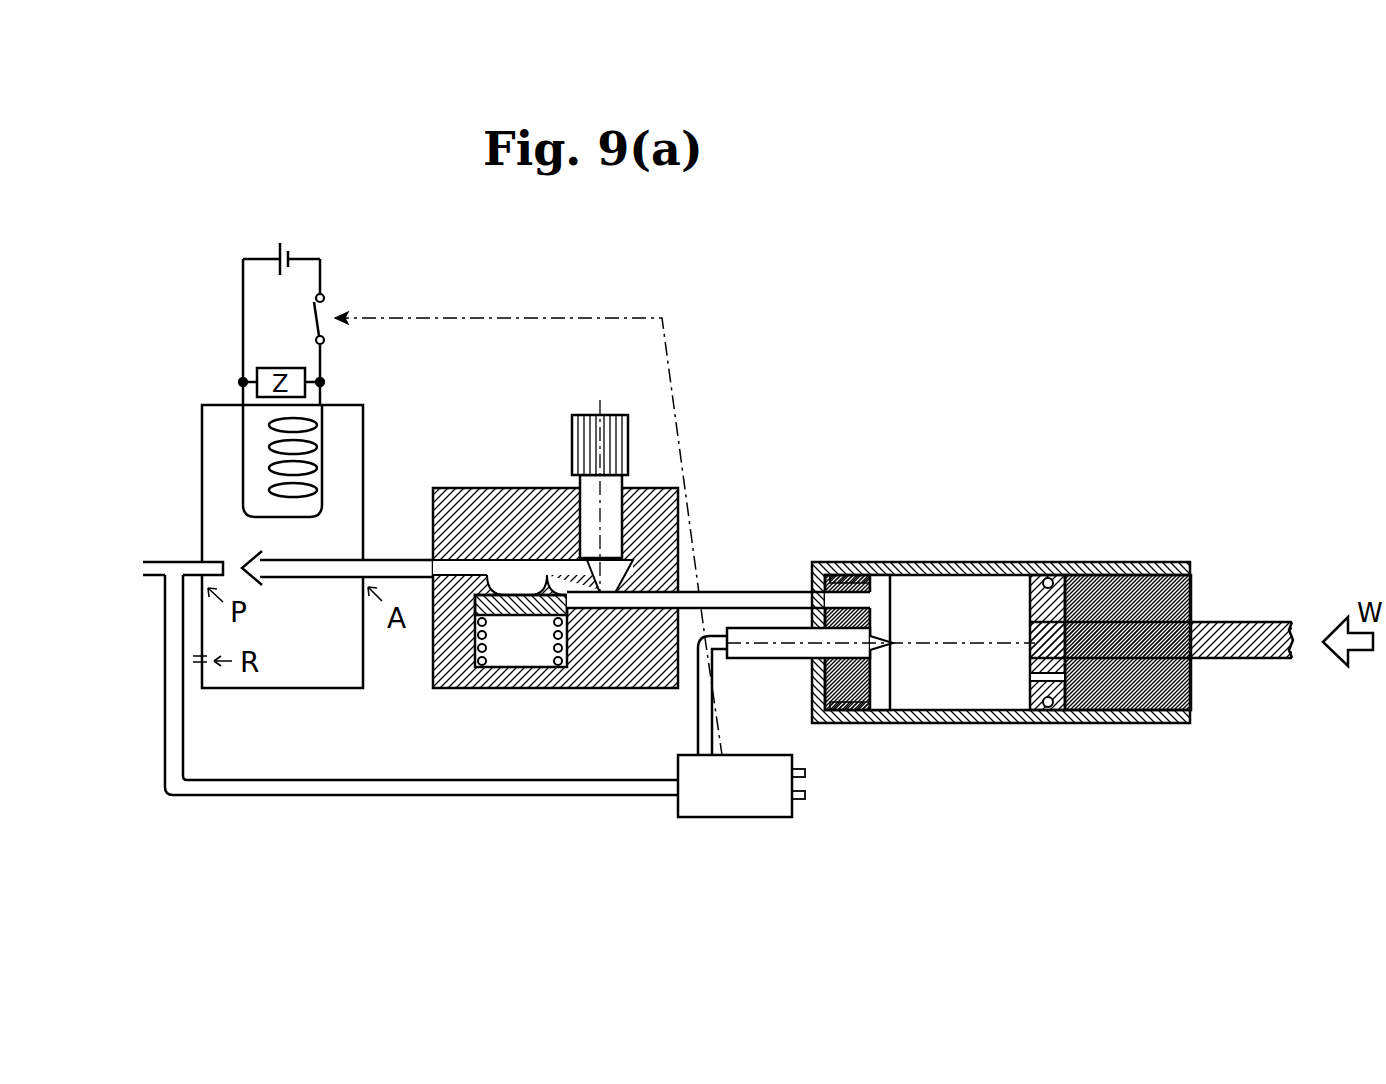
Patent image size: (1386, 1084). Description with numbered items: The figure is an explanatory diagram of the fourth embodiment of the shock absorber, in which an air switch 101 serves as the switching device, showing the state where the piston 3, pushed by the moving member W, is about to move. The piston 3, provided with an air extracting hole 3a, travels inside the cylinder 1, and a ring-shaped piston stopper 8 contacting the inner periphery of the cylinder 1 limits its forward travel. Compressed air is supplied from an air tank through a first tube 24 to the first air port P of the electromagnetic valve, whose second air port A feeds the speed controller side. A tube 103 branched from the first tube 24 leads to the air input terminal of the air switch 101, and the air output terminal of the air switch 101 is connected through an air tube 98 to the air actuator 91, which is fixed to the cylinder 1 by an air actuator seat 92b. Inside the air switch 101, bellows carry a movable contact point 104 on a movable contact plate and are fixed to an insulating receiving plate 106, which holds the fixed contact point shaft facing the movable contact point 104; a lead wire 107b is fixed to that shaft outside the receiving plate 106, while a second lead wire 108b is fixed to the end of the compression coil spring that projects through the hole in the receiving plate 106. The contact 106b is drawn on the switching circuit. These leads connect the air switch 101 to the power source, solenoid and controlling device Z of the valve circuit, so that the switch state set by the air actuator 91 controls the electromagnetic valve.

The cylinder 1 is at (1013, 562).
The piston 3 is at (1113, 562).
The air extracting hole 3a is at (1133, 723).
The piston stopper 8 is at (862, 573).
The first tube 24 is at (195, 557).
The air actuator 91 is at (757, 628).
The air actuator seat 92b is at (863, 723).
The air tube 98 is at (697, 723).
The air switch 101 is at (697, 797).
The tube 103 is at (465, 798).
The movable contact point 104 is at (335, 302).
The receiving plate 106 is at (324, 294).
The switch contact 106b is at (324, 358).
The lead wire 107b is at (303, 252).
The lead wire 108b is at (805, 773).